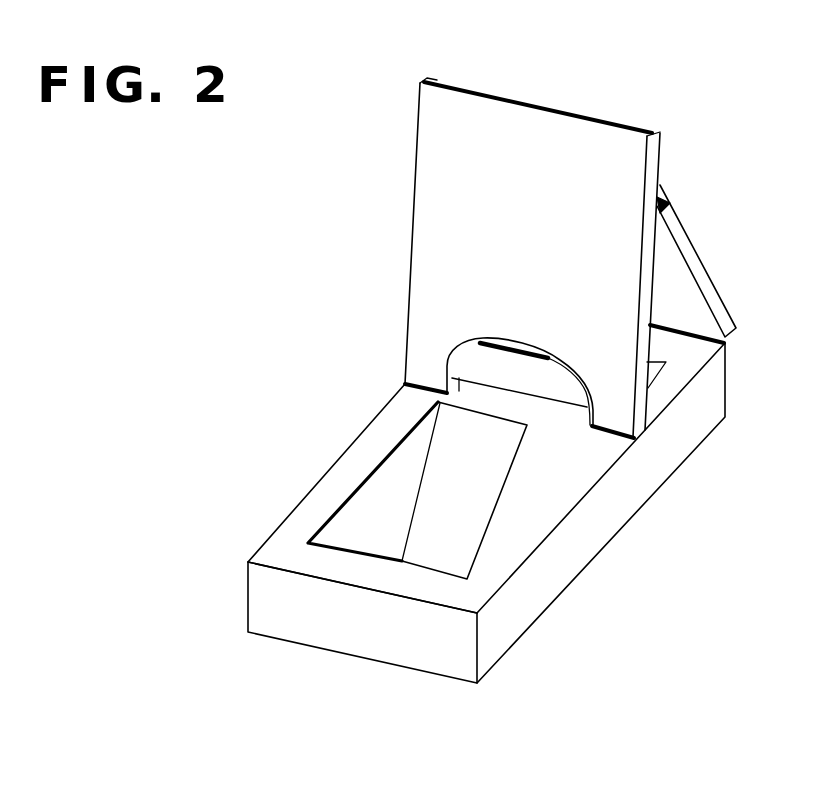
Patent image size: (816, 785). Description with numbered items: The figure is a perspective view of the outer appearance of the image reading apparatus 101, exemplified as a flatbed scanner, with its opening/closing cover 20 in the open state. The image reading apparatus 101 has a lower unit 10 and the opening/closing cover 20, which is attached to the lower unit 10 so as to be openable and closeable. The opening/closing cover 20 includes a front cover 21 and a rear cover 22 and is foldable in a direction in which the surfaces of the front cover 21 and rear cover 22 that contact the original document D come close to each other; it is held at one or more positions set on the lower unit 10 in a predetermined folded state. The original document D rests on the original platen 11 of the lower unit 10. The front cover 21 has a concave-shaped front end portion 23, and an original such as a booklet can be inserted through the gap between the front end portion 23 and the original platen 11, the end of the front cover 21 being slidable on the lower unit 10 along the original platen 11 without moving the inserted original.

The image reading apparatus 101 is at (652, 54).
The lower unit 10 is at (408, 648).
The original platen 11 is at (467, 540).
The original document D is at (360, 510).
The opening/closing cover 20 is at (550, 109).
The front cover 21 is at (433, 218).
The rear cover 22 is at (685, 248).
The concave-shaped front end portion 23 is at (565, 405).